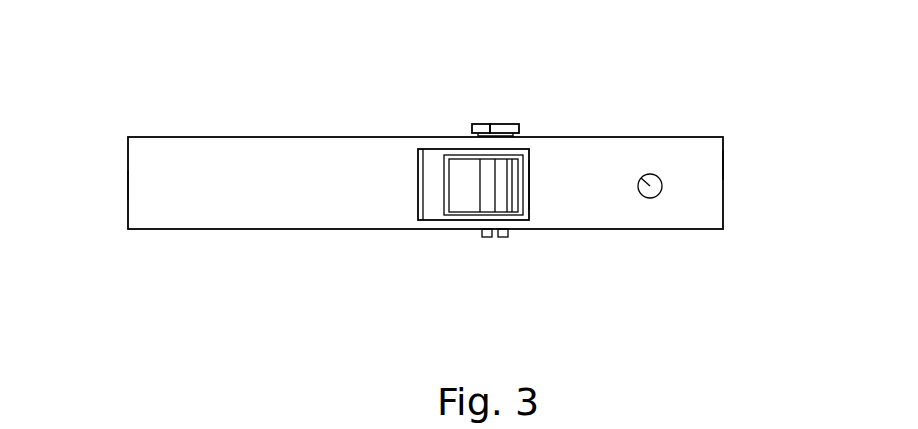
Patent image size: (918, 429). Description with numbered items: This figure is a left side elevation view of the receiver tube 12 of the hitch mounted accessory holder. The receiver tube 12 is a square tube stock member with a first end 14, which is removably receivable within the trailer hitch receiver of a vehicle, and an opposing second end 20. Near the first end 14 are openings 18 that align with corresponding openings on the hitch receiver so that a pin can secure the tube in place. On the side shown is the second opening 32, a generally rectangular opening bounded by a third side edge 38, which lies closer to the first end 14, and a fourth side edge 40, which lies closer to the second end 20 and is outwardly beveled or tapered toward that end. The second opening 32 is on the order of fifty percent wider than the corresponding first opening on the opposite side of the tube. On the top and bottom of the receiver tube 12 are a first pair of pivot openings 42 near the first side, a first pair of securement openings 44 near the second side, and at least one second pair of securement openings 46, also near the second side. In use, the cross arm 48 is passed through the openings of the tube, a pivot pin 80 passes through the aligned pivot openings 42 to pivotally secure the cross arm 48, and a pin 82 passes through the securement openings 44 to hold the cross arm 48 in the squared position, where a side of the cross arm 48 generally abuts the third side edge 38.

The receiver tube 12 is at (250, 128).
The first end 14 is at (723, 160).
The openings 18 is at (641, 178).
The second end 20 is at (128, 190).
The second opening 32 is at (435, 190).
The third side edge 38 is at (529, 185).
The fourth side edge 40 is at (418, 183).
The first pair of pivot openings 42 is at (468, 135).
The first pair of securement openings 44 is at (522, 135).
The second pair of securement openings 46 is at (437, 135).
The cross arm 48 is at (467, 218).
The pivot pin 80 is at (482, 124).
The pin 82 is at (510, 124).